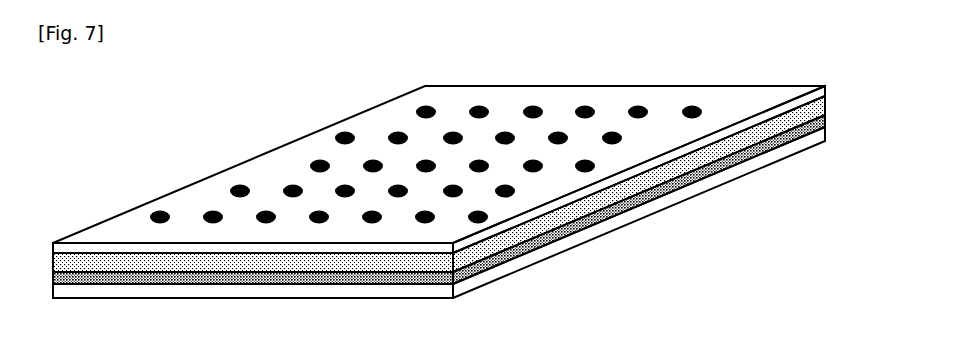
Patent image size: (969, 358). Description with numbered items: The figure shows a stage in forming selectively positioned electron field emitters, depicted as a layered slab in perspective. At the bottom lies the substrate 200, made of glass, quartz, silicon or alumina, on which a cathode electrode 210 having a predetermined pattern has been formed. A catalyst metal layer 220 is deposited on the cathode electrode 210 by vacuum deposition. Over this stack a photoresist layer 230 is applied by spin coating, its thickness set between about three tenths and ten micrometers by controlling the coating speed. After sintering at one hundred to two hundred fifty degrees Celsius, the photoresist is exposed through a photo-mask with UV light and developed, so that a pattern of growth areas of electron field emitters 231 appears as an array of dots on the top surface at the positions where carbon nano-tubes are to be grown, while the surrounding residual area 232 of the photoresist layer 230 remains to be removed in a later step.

The substrate 200 is at (460, 292).
The cathode electrode 210 is at (507, 255).
The catalyst metal layer 220 is at (545, 223).
The photoresist layer 230 is at (602, 183).
The growth areas of electron field emitters 231 is at (292, 186).
The residual area of the photoresist layer 232 is at (668, 118).